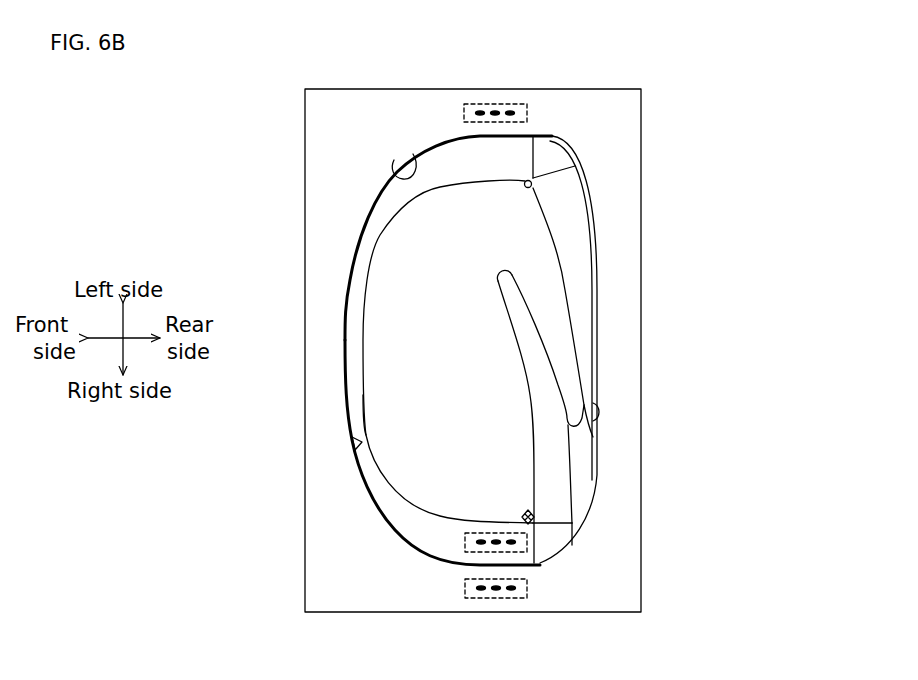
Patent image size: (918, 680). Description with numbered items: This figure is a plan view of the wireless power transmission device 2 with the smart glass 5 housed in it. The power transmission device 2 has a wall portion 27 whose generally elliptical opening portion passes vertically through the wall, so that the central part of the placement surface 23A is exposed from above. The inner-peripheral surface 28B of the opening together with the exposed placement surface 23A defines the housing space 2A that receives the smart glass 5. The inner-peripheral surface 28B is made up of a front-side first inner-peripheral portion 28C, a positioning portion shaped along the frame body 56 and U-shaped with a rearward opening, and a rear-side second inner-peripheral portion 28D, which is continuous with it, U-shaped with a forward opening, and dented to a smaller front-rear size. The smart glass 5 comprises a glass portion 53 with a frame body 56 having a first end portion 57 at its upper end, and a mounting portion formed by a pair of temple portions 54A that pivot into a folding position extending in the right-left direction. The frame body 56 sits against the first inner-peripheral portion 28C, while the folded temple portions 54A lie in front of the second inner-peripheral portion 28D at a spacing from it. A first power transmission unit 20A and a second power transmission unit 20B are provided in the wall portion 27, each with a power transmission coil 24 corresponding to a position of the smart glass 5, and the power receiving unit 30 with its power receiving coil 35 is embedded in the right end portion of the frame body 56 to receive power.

The power transmission device 2 is at (462, 304).
The housing space 2A is at (428, 467).
The smart glass 5 is at (590, 238).
The first power transmission unit 20A is at (515, 600).
The second power transmission unit 20B is at (483, 104).
The placement surface 23A is at (550, 304).
The power transmission coil 24 is at (508, 106).
The wall portion 27 is at (600, 87).
The inner-peripheral surface 28B is at (395, 170).
The first inner-peripheral portion 28C is at (355, 449).
The second inner-peripheral portion 28D is at (596, 426).
The power receiving unit 30 is at (489, 524).
The power receiving coil 35 is at (500, 554).
The glass portion 53 is at (372, 232).
The temple portions 54A is at (587, 207).
The frame body 56 is at (362, 355).
The first end portion 57 is at (365, 417).